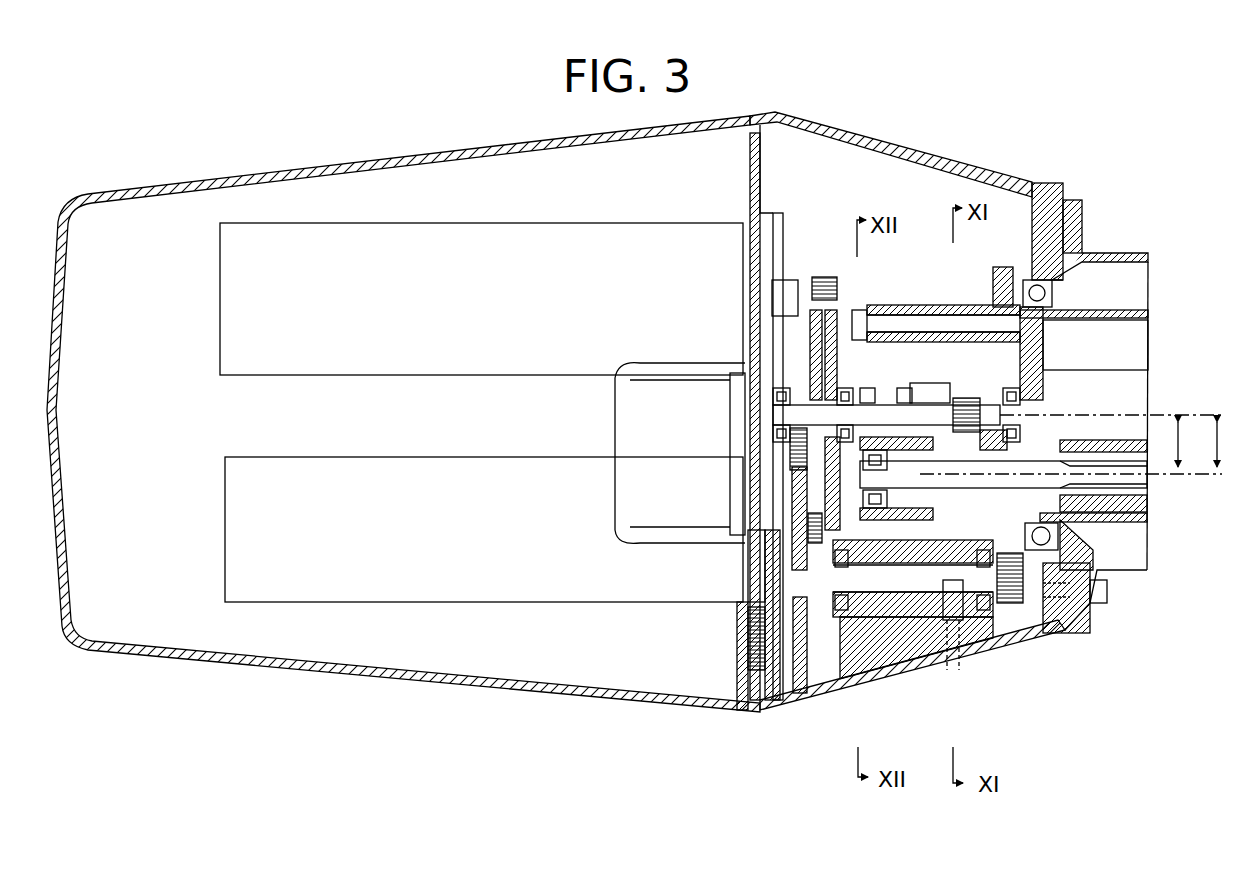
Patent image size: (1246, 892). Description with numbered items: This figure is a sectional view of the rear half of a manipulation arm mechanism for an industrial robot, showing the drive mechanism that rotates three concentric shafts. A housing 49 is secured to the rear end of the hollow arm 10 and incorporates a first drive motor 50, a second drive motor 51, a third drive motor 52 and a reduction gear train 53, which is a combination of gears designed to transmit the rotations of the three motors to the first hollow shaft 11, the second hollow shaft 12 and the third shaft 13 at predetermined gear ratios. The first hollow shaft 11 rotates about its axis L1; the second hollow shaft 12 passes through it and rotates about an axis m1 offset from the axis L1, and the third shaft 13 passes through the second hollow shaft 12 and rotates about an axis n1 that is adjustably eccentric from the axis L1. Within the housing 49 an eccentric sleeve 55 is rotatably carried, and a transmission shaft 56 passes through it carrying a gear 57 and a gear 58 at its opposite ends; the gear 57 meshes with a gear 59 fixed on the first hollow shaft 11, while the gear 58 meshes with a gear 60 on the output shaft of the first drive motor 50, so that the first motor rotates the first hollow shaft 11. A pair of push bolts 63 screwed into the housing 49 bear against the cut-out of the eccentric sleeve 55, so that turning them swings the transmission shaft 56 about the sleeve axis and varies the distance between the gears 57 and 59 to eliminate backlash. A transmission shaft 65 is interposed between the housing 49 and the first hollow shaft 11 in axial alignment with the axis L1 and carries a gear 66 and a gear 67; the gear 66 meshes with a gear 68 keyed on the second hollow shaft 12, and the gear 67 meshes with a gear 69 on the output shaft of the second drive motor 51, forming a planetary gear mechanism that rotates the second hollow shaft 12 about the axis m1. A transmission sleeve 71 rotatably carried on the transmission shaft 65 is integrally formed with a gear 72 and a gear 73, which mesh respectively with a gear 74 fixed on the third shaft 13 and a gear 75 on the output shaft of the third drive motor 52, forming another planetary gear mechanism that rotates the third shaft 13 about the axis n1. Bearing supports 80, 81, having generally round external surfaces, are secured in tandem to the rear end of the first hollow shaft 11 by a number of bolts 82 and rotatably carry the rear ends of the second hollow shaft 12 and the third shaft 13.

The hollow arm 10 is at (1127, 255).
The first hollow shaft 11 is at (1115, 310).
The second hollow shaft 12 is at (1103, 487).
The third shaft 13 is at (1117, 517).
The housing 49 is at (372, 676).
The first drive motor 50 is at (630, 412).
The second drive motor 51 is at (530, 588).
The third drive motor 52 is at (556, 236).
The reduction gear train 53 is at (915, 232).
The eccentric sleeve 55 is at (890, 612).
The transmission shaft 56 is at (903, 585).
The gear 57 is at (1007, 590).
The gear 58 is at (803, 683).
The gear 59 is at (1050, 630).
The gear 60 is at (788, 458).
The push bolts 63 is at (953, 615).
The transmission shaft 65 is at (787, 415).
The gear 66 is at (975, 400).
The gear 67 is at (812, 337).
The gear 68 is at (985, 430).
The gear 69 is at (800, 543).
The transmission sleeve 71 is at (870, 388).
The gear 72 is at (906, 390).
The gear 73 is at (778, 332).
The gear 74 is at (925, 428).
The gear 75 is at (823, 277).
The bearing support 80 is at (967, 306).
The bearing support 81 is at (897, 306).
The bolts 82 is at (943, 323).
The axis of the first hollow shaft L1 is at (1190, 413).
The axis of the third shaft n1 is at (1188, 476).
The axis of the second hollow shaft m1 is at (1147, 510).